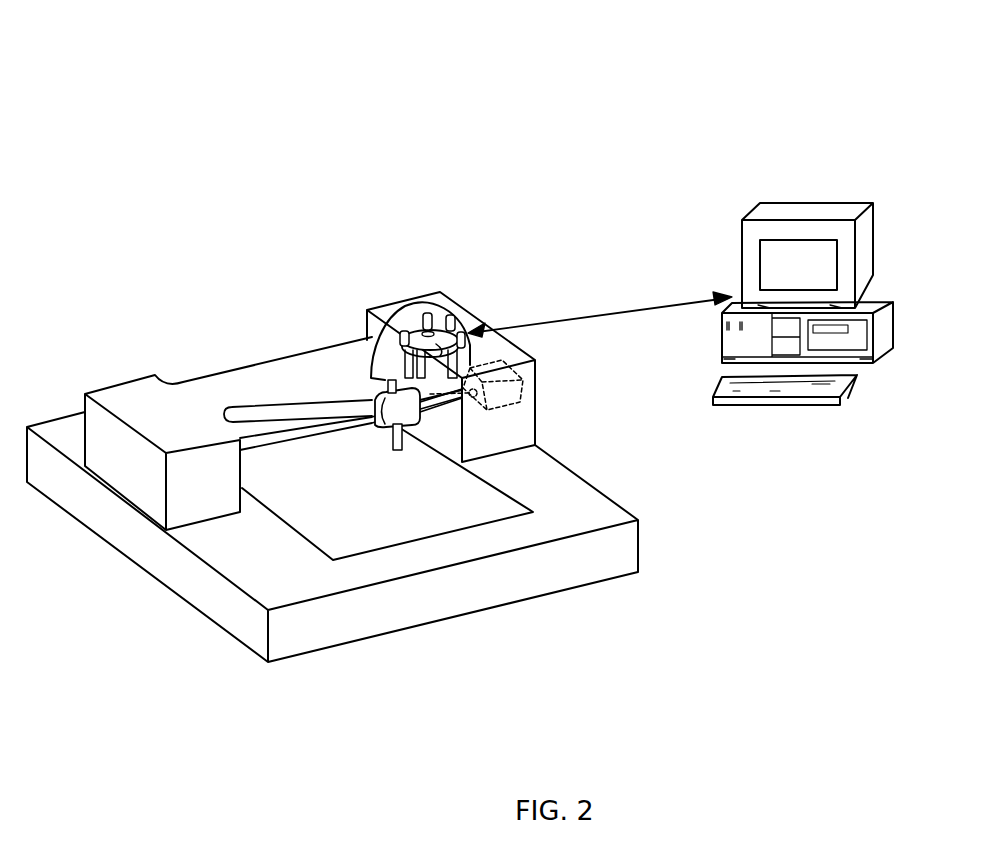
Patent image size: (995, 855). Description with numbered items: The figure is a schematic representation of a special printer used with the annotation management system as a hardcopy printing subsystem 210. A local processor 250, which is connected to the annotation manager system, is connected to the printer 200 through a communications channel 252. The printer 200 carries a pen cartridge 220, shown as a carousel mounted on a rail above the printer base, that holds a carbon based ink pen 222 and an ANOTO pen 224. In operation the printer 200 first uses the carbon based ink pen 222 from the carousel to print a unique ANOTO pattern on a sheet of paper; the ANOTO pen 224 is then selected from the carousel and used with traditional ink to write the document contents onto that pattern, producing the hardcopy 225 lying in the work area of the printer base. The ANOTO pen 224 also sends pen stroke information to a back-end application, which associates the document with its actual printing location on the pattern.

The hardcopy printing subsystem 210 is at (228, 118).
The printer 200 is at (193, 360).
The pen cartridge 220 is at (460, 330).
The carbon based ink pen 222 is at (408, 305).
The ANOTO pen 224 is at (446, 300).
The hardcopy 225 is at (343, 484).
The local processor 250 is at (803, 280).
The communications channel 252 is at (600, 319).